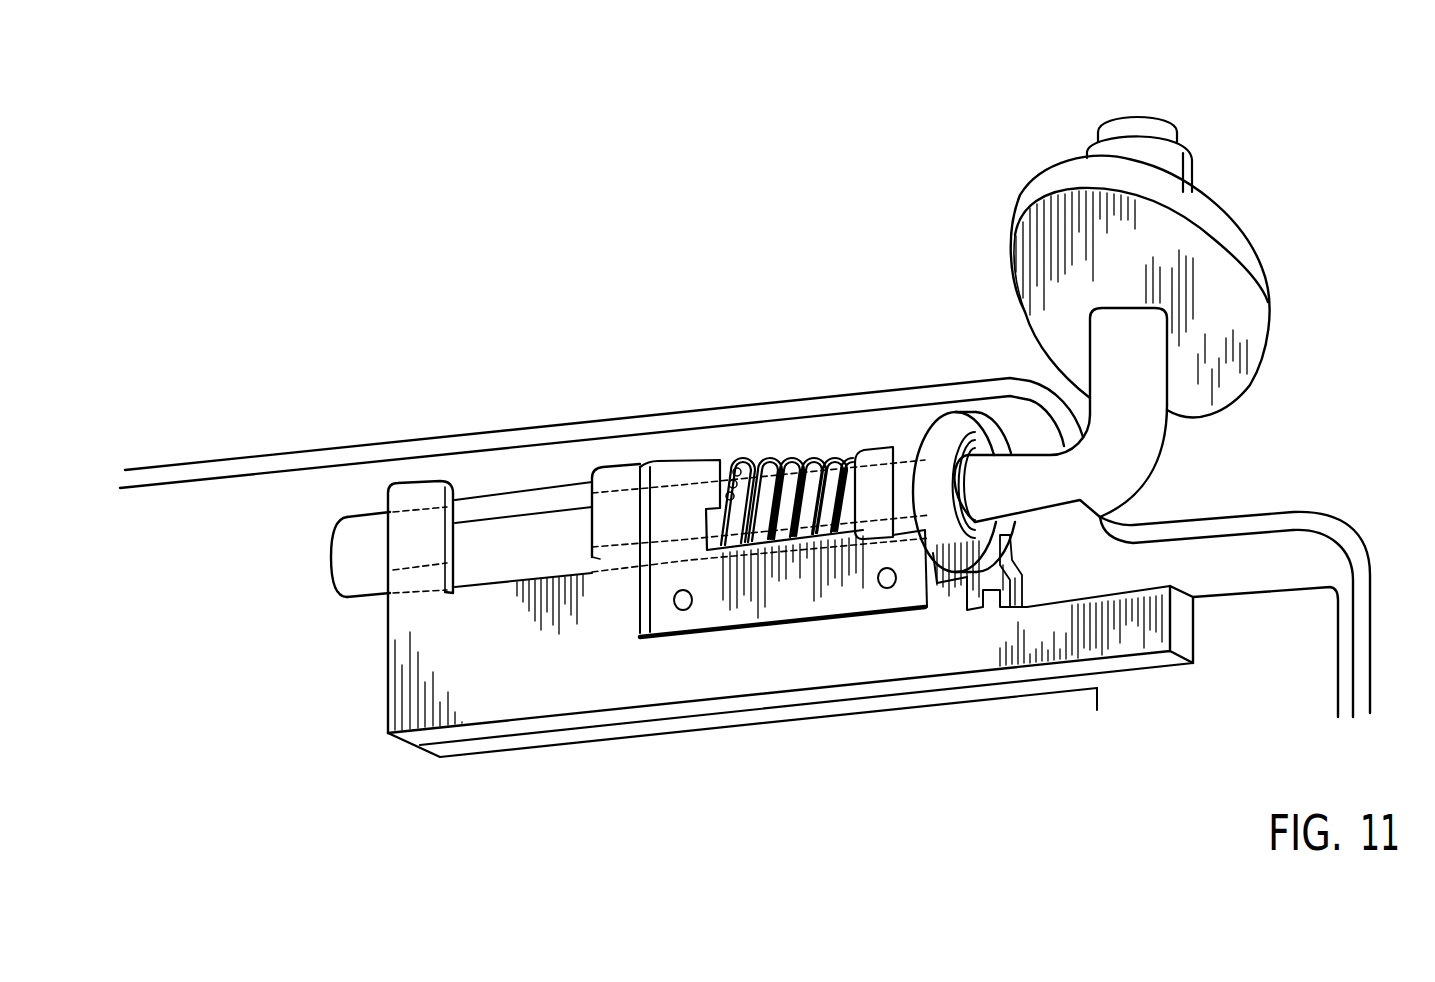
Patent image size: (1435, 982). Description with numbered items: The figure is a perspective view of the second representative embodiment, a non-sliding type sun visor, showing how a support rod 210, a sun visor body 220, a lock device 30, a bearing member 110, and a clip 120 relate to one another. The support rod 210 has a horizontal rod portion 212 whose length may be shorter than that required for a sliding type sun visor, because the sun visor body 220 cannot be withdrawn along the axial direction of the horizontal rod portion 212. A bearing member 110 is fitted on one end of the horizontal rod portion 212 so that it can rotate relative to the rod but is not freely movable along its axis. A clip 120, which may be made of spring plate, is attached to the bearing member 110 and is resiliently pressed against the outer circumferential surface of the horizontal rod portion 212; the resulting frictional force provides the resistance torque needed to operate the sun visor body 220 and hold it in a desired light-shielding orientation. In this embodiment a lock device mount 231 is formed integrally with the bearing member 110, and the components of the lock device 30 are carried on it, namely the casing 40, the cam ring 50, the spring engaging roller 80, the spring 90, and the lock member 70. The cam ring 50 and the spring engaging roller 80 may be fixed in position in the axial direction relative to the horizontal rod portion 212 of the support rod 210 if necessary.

The lock device 30 is at (794, 459).
The casing 40 is at (768, 609).
The cam ring 50 is at (953, 410).
The lock member 70 is at (1014, 539).
The spring engaging roller 80 is at (718, 459).
The spring 90 is at (820, 459).
The bearing member 110 is at (620, 477).
The clip 120 is at (517, 497).
The support rod 210 is at (1172, 363).
The horizontal rod portion 212 is at (373, 533).
The sun visor body 220 is at (728, 403).
The lock device mount 231 is at (840, 692).